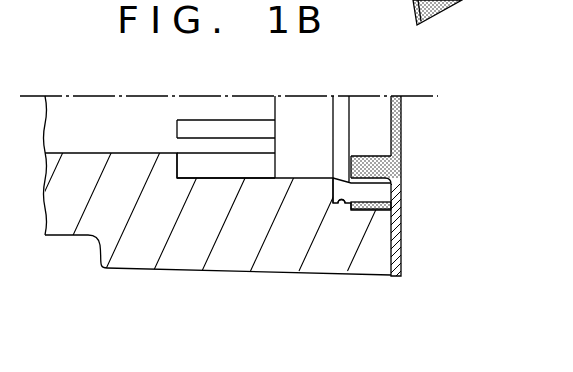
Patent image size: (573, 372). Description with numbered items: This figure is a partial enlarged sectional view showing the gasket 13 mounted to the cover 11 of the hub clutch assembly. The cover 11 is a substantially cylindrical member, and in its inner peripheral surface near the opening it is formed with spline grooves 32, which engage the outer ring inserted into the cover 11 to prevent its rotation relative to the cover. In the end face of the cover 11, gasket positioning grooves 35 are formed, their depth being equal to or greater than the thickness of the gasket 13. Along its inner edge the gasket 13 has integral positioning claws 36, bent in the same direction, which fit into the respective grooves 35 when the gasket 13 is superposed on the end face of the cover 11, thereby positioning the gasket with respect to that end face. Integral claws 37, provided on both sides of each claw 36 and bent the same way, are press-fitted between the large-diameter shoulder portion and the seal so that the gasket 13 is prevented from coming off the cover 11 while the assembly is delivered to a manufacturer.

The cover 11 is at (157, 276).
The gasket 13 is at (403, 240).
The spline grooves 32 is at (252, 165).
The gasket positioning grooves 35 is at (343, 199).
The positioning claws 36 is at (372, 203).
The claws 37 is at (383, 167).